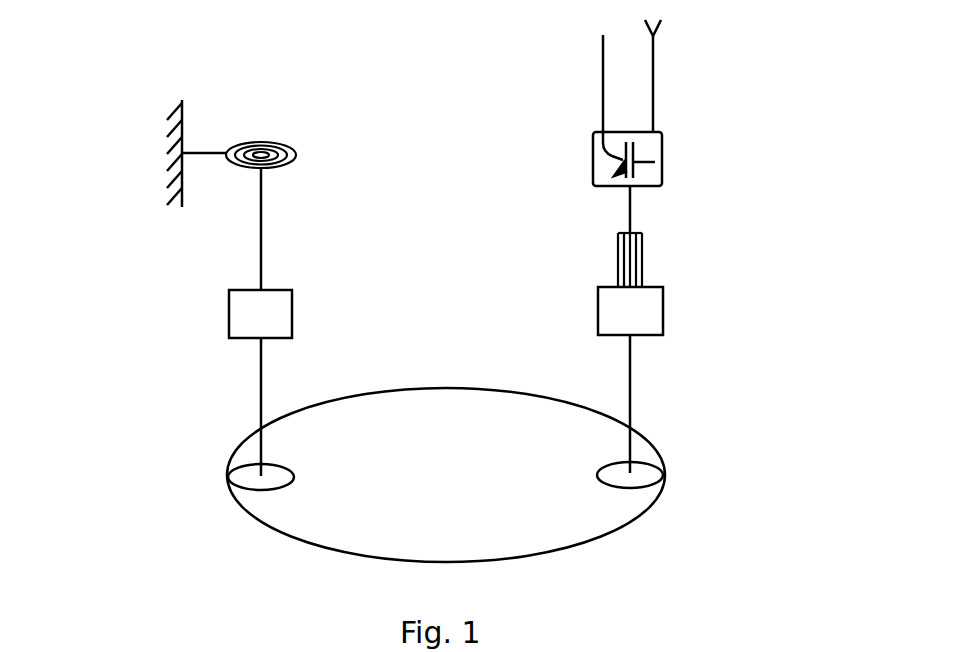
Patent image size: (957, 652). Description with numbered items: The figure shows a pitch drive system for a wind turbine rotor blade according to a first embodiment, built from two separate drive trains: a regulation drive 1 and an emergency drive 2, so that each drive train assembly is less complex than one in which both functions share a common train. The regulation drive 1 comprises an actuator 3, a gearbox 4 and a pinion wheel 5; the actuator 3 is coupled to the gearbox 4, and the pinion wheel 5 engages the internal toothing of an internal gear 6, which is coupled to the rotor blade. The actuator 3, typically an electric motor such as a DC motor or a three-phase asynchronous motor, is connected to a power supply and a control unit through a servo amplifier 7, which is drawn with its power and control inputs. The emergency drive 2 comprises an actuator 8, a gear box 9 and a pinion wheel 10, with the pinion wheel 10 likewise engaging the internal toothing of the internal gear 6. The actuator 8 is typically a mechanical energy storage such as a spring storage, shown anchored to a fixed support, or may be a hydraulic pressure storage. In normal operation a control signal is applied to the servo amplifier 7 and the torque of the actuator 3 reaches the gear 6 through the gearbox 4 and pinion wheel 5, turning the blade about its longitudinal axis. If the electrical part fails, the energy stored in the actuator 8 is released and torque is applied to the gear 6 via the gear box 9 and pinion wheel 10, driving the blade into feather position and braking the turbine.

The regulation drive 1 is at (820, 365).
The emergency drive 2 is at (92, 373).
The actuator 3 is at (643, 252).
The gearbox 4 is at (663, 313).
The pinion wheel 5 is at (660, 463).
The internal gear 6 is at (612, 527).
The servo amplifier 7 is at (662, 152).
The actuator 8 is at (290, 143).
The gear box 9 is at (229, 313).
The pinion wheel 10 is at (232, 468).